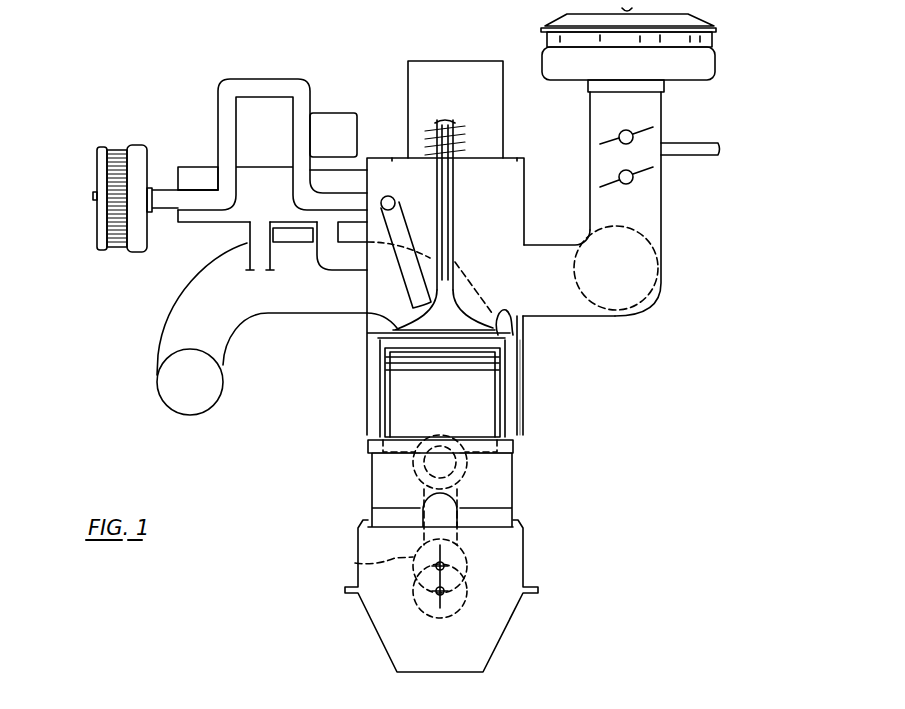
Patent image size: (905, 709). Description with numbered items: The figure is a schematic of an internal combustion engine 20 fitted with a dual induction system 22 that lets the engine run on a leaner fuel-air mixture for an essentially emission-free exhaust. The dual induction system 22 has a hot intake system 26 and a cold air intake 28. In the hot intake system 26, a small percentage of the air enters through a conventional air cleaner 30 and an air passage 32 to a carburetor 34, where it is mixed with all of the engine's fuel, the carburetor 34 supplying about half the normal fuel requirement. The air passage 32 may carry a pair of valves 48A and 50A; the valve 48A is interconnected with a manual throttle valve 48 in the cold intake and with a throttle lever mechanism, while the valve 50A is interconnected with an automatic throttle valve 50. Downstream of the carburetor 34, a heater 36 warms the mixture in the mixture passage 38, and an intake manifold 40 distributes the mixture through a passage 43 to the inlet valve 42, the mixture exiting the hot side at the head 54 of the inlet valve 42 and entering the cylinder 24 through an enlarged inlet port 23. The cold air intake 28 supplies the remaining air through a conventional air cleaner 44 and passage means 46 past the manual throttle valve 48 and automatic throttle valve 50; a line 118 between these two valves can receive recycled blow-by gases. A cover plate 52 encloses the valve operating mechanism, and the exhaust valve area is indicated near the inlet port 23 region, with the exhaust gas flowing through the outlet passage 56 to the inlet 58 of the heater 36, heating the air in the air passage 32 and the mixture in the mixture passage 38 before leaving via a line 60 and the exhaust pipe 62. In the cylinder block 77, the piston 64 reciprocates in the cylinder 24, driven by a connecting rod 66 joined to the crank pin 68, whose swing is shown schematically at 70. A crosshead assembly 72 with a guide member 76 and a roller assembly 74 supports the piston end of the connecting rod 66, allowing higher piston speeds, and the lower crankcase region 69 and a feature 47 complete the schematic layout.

The internal combustion engine 20 is at (479, 553).
The dual induction system 22 is at (554, 221).
The inlet port 23 is at (503, 314).
The cylinder 24 is at (523, 397).
The hot intake system 26 is at (257, 146).
The cold air intake 28 is at (650, 316).
The air cleaner 30 is at (92, 228).
The air passage 32 is at (221, 135).
The carburetor 34 is at (340, 115).
The heater 36 is at (218, 222).
The mixture passage 38 is at (296, 192).
The intake manifold 40 is at (394, 202).
The inlet valve 42 is at (455, 217).
The passage 43 is at (402, 270).
The air cleaner 44 is at (728, 58).
The passage means 46 is at (655, 272).
The intake passage 47 is at (553, 245).
The manual throttle valve 48 is at (648, 172).
The valve 48A is at (305, 173).
The automatic throttle valve 50 is at (602, 140).
The valve 50A is at (305, 150).
The cover plate 52 is at (471, 60).
The head of the inlet valve 54 is at (367, 332).
The outlet passage 56 is at (470, 280).
The inlet of the heater 58 is at (327, 262).
The line 60 is at (250, 272).
The exhaust pipe 62 is at (178, 404).
The piston 64 is at (395, 388).
The connecting rod 66 is at (355, 563).
The crank pin 68 is at (452, 566).
The crankcase 69 is at (386, 650).
The swing of the crank pin 70 is at (475, 605).
The crosshead assembly 72 is at (532, 463).
The roller assembly 74 is at (410, 458).
The guide member 76 is at (505, 494).
The cylinder block 77 is at (525, 385).
The line 118 is at (710, 143).